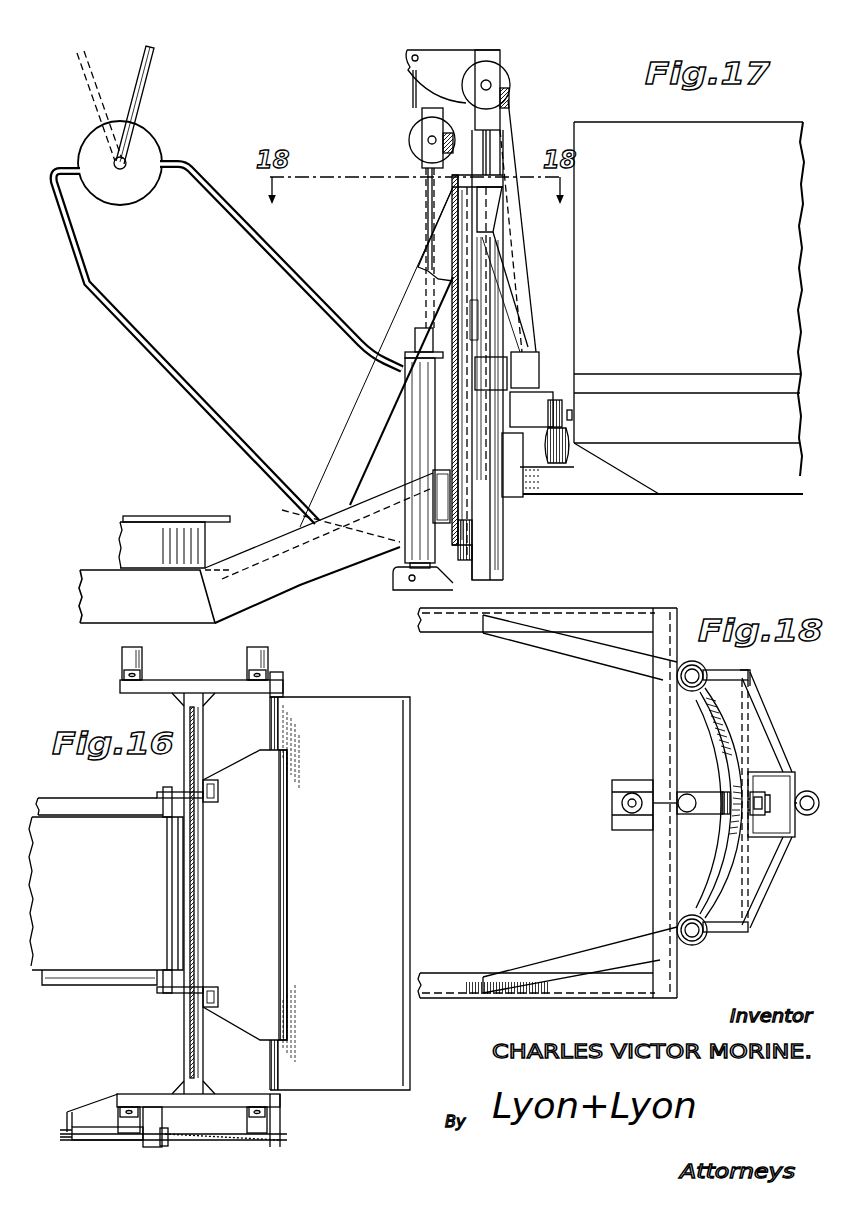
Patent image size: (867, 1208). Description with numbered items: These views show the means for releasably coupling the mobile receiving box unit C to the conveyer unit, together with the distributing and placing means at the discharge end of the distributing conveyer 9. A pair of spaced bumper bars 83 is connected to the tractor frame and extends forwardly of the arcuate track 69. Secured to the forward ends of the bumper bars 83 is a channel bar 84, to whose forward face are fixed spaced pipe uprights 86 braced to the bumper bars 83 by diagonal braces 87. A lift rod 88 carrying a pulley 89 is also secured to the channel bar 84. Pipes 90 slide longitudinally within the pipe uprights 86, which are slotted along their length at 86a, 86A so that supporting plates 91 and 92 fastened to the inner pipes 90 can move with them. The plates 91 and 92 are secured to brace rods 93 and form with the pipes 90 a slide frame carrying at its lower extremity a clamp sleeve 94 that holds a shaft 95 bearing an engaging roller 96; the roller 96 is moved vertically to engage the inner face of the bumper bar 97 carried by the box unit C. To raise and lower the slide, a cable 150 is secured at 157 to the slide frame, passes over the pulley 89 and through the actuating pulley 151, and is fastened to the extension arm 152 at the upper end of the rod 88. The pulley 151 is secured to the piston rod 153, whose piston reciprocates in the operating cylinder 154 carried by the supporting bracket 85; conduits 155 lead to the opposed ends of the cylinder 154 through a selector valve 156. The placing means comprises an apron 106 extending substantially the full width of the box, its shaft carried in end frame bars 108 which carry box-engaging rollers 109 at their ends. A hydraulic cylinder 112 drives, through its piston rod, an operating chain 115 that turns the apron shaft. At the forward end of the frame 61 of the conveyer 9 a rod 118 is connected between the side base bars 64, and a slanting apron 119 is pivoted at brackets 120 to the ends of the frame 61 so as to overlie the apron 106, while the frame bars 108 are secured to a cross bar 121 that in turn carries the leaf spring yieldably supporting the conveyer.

In FIG. 16, the distributing and positioning conveyer 9 is at (107, 826).
In FIG. 16, the frame of the distributing conveyer 61 is at (88, 980).
In FIG. 16, the side base bars 64 is at (140, 982).
In FIG. 17, the arcuate track 69 is at (212, 500).
In FIG. 17, the bumper bars 83 is at (274, 548).
In FIG. 18, the bumper bars 83 is at (577, 612).
In FIG. 17, the channel bar 84 is at (440, 500).
In FIG. 18, the channel bar 84 is at (660, 735).
In FIG. 17, the supporting bracket 85 is at (402, 585).
In FIG. 18, the supporting bracket 85 is at (646, 816).
In FIG. 17, the pipe uprights 86 is at (452, 304).
In FIG. 18, the pipe uprights 86 is at (692, 666).
In FIG. 17, the longitudinal slots 86a is at (470, 306).
In FIG. 18, the longitudinal slots 86A is at (720, 671).
In FIG. 17, the diagonal braces 87 is at (333, 456).
In FIG. 18, the diagonal braces 87 is at (615, 668).
In FIG. 17, the lift rod 88 is at (503, 140).
In FIG. 17, the pulley 89 is at (504, 82).
In FIG. 17, the pipes 90 is at (460, 276).
In FIG. 18, the pipes 90 is at (682, 686).
In FIG. 17, the supporting plate 91 is at (492, 201).
In FIG. 18, the supporting plate 91 is at (749, 707).
In FIG. 17, the supporting plate 92 is at (496, 370).
In FIG. 18, the supporting plate 92 is at (750, 682).
In FIG. 17, the brace rods 93 is at (505, 256).
In FIG. 18, the brace rods 93 is at (767, 751).
In FIG. 18, the clamp sleeve 94 is at (808, 790).
In FIG. 17, the shaft 95 is at (556, 400).
In FIG. 18, the shaft 95 is at (807, 816).
In FIG. 17, the engaging roller 96 is at (562, 446).
In FIG. 17, the bumper bar 97 is at (512, 490).
In FIG. 16, the apron 106 is at (395, 784).
In FIG. 16, the end frame bars 108 is at (157, 692).
In FIG. 16, the box-engaging rollers 109 is at (143, 664).
In FIG. 16, the hydraulic cylinder 112 is at (112, 1141).
In FIG. 16, the operating chain 115 is at (228, 1142).
In FIG. 16, the rod 118 is at (196, 883).
In FIG. 16, the slanting apron 119 is at (270, 863).
In FIG. 16, the brackets 120 is at (218, 997).
In FIG. 16, the cross bar 121 is at (212, 765).
In FIG. 17, the cable 150 is at (503, 162).
In FIG. 17, the actuating pulley 151 is at (422, 144).
In FIG. 17, the extension arm 152 is at (443, 54).
In FIG. 17, the piston rod 153 is at (428, 194).
In FIG. 18, the piston rod 153 is at (625, 816).
In FIG. 17, the operating cylinder 154 is at (420, 440).
In FIG. 18, the operating cylinder 154 is at (628, 793).
In FIG. 17, the conduits 155 is at (316, 297).
In FIG. 17, the selector valve 156 is at (147, 138).
In FIG. 18, the cable securing point 157 is at (767, 808).
In FIG. 17, the mobile receiving box unit C is at (693, 120).